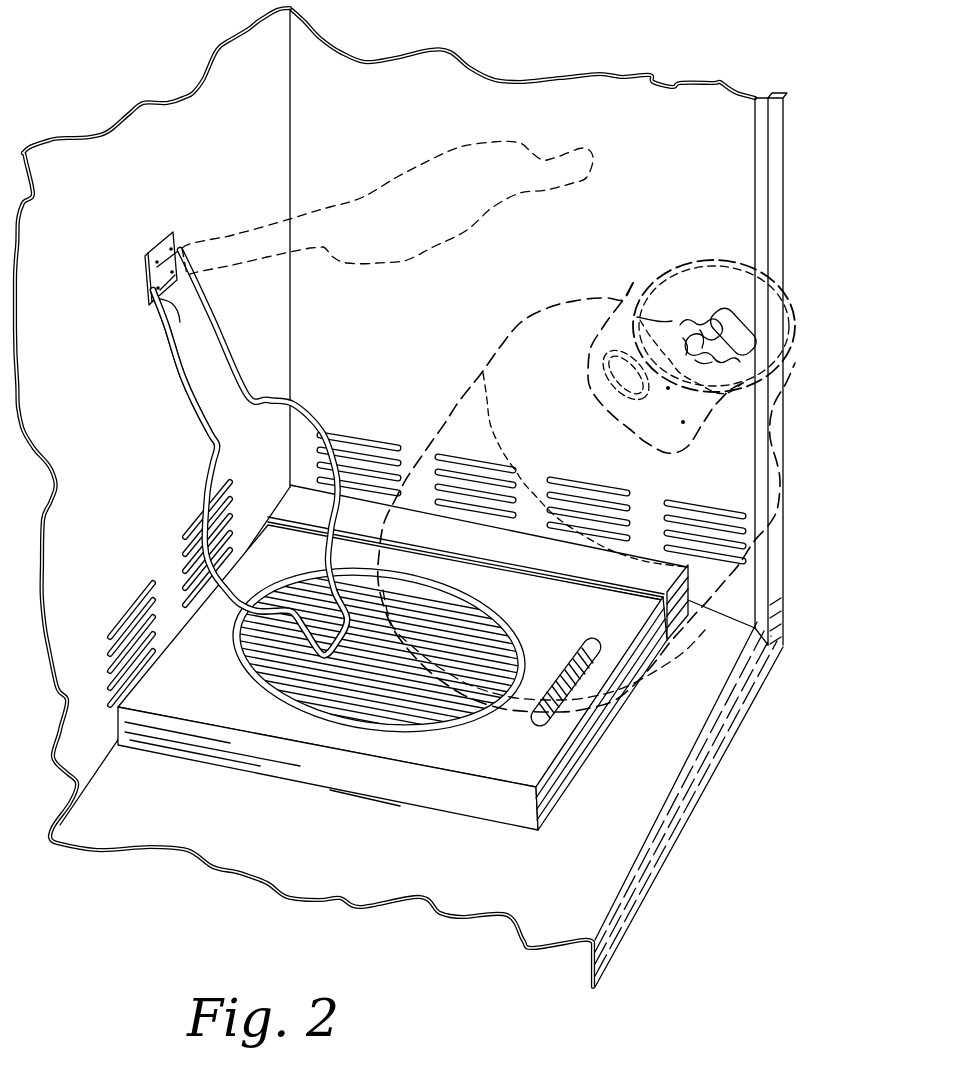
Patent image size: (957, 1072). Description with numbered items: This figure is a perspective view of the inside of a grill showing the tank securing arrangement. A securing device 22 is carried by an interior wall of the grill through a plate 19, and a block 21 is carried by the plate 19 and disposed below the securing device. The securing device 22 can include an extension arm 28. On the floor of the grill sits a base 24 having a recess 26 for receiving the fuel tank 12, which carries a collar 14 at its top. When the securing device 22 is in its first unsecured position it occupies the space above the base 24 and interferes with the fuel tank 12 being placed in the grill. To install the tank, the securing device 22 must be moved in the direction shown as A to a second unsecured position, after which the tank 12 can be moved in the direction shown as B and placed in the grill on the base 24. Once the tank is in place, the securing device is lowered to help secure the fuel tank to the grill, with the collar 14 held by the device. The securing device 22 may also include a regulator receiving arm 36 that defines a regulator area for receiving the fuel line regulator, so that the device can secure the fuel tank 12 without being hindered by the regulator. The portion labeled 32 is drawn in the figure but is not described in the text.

The fuel tank 12 is at (717, 588).
The collar 14 is at (673, 262).
The plate 19 is at (157, 250).
The block 21 is at (167, 333).
The securing device 22 is at (268, 216).
The base 24 is at (220, 706).
The recess 26 is at (373, 713).
The extension arm 28 is at (180, 367).
The arm tip 32 is at (240, 599).
The regulator receiving arm 36 is at (340, 580).
The direction of securing device movement A is at (327, 247).
The direction of tank movement B is at (396, 316).